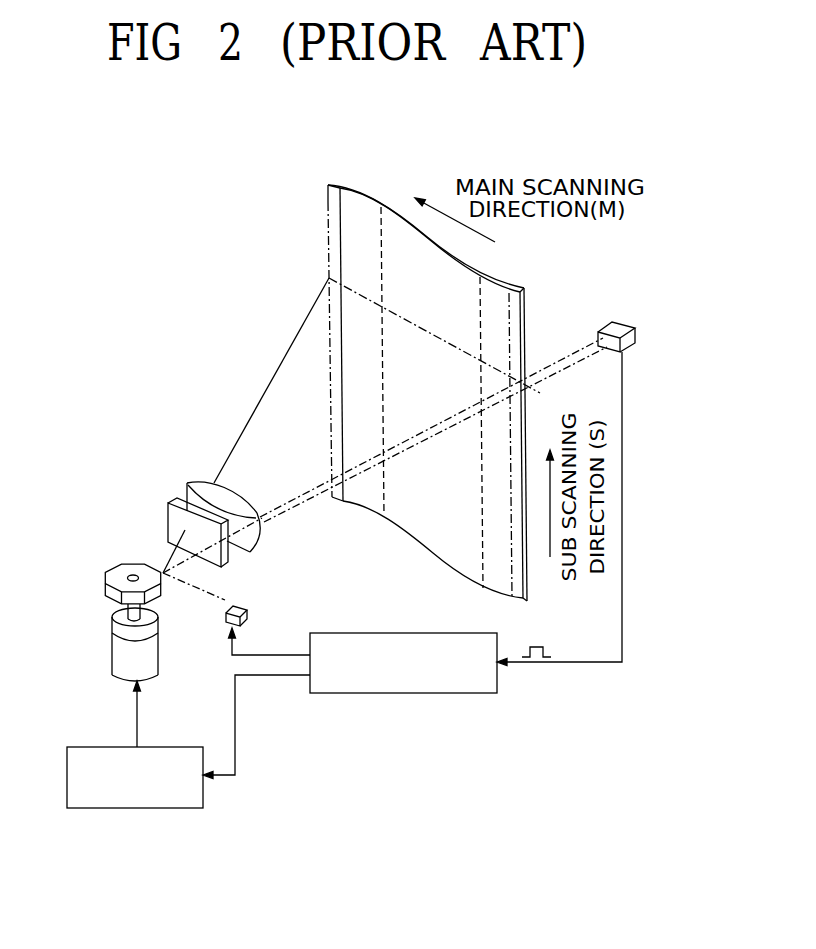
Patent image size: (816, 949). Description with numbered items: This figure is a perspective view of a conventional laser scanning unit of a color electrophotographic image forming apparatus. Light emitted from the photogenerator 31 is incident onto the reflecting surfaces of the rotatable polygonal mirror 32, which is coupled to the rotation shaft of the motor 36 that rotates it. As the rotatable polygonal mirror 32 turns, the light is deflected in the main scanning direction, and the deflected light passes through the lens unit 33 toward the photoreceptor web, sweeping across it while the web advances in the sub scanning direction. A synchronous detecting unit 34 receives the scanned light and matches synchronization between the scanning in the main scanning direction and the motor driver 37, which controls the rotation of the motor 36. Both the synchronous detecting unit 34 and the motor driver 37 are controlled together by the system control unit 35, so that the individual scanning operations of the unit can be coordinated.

The photogenerator 31 is at (246, 606).
The rotatable polygonal mirror 32 is at (112, 578).
The lens unit 33 is at (161, 481).
The synchronous detecting unit 34 is at (621, 330).
The system control unit 35 is at (403, 693).
The motor 36 is at (112, 655).
The motor driver 37 is at (137, 808).